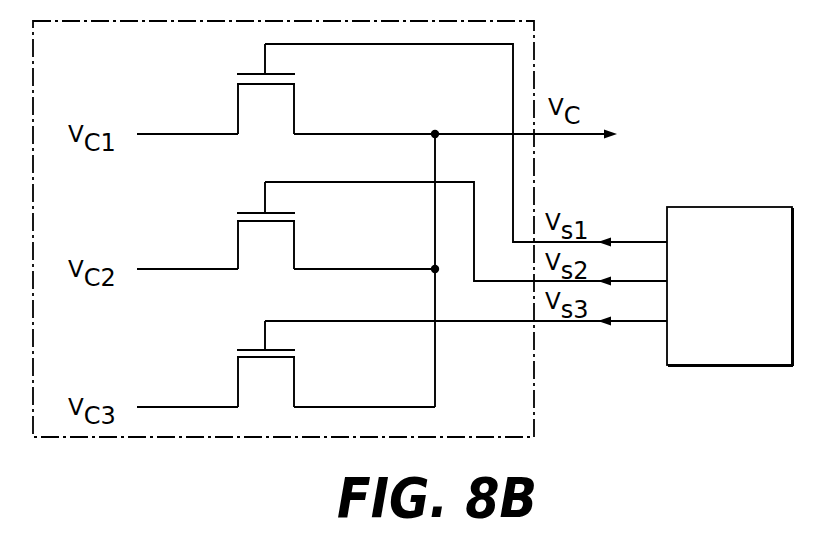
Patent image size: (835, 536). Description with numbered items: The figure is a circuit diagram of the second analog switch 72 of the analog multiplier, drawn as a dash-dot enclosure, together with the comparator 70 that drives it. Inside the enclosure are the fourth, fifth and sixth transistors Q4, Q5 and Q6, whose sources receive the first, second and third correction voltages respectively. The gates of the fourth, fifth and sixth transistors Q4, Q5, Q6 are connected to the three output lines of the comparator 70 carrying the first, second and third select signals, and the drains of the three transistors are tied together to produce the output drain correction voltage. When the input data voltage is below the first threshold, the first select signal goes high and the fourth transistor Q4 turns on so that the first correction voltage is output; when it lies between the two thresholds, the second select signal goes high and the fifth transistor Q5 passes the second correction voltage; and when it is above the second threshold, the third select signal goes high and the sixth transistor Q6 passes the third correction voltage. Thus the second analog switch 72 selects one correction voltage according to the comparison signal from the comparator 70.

The comparator 70 is at (746, 293).
The second analog switch 72 is at (522, 397).
The fourth transistor Q4 is at (266, 93).
The fifth transistor Q5 is at (266, 229).
The sixth transistor Q6 is at (266, 368).